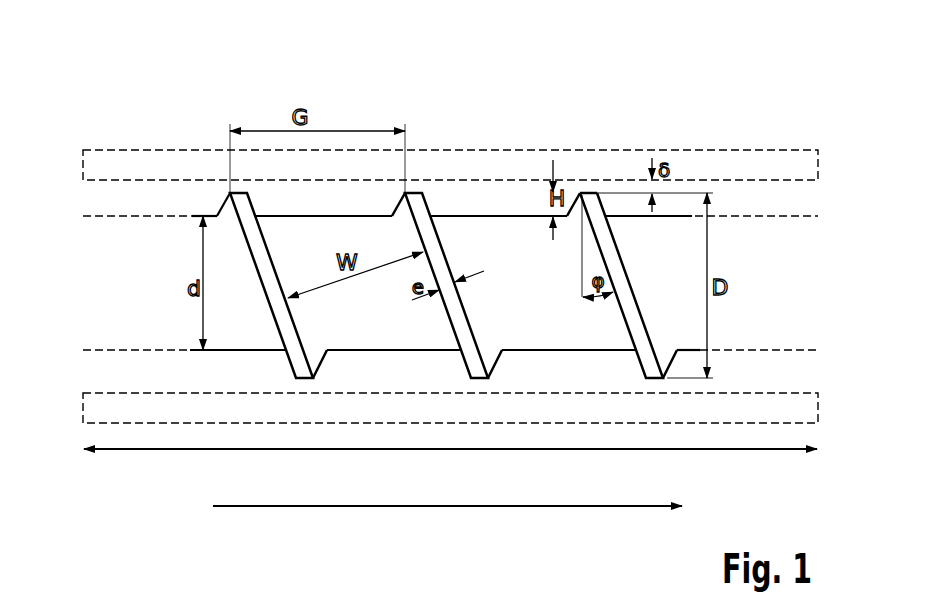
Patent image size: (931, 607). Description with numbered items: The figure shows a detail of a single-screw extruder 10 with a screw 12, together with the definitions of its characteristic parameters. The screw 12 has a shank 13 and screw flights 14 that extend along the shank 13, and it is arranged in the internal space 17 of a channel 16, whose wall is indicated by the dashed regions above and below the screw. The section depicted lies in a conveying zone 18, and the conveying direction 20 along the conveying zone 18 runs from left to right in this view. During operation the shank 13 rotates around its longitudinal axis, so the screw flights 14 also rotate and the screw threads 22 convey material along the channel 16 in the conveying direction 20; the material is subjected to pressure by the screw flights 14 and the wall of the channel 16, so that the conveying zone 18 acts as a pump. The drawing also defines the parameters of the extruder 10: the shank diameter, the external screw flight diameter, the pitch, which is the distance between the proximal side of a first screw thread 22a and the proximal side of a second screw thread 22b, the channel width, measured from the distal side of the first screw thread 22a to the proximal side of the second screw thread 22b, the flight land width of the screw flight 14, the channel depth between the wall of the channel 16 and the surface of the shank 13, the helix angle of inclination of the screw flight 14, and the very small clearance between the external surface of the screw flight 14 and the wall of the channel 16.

The single-screw extruder 10 is at (333, 98).
The screw 12 is at (182, 205).
The shank 13 is at (217, 214).
The screw flights 14 is at (580, 188).
The channel 16 is at (460, 167).
The internal space 17 is at (500, 200).
The conveying zone 18 is at (463, 451).
The conveying direction 20 is at (417, 508).
The screw threads 22 is at (604, 198).
The first screw thread 22a is at (240, 220).
The second screw thread 22b is at (423, 196).